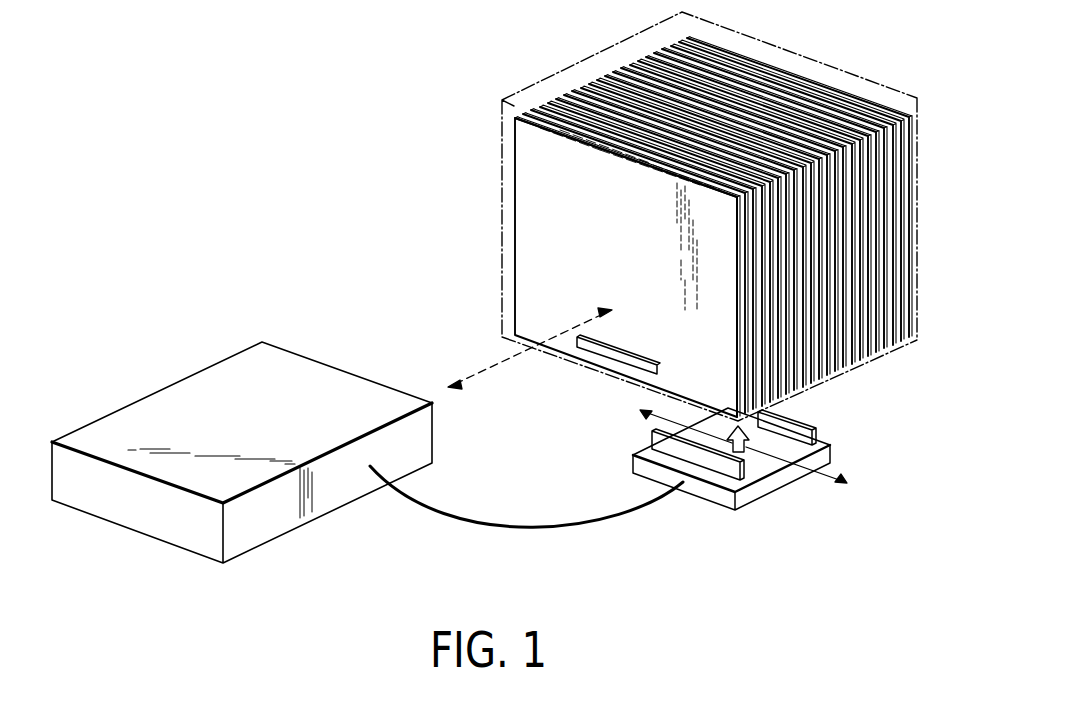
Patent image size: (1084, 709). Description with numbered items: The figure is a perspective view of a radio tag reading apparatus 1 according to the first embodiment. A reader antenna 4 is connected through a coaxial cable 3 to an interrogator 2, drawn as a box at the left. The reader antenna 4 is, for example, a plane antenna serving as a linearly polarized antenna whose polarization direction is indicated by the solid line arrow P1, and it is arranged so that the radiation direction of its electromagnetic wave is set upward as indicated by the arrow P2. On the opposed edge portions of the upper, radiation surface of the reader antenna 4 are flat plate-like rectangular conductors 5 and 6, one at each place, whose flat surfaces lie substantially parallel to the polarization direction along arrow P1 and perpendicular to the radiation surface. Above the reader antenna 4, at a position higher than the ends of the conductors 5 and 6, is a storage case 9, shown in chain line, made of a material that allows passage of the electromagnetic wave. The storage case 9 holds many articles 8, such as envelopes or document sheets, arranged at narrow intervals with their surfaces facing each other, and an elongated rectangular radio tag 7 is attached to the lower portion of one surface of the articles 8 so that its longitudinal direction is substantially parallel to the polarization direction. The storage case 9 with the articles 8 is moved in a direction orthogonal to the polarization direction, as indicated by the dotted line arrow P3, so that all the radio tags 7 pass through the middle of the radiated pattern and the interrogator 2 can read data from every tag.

The radio tag reading apparatus 1 is at (484, 295).
The interrogator 2 is at (203, 383).
The coaxial cable 3 is at (525, 522).
The reader antenna 4 is at (747, 493).
The conductor 5 is at (657, 444).
The conductor 6 is at (813, 431).
The radio tag 7 is at (590, 348).
The article 8 is at (527, 203).
The storage case 9 is at (500, 120).
The polarization direction arrow P1 is at (833, 469).
The radiation direction arrow P2 is at (750, 451).
The movement direction arrow P3 is at (493, 362).